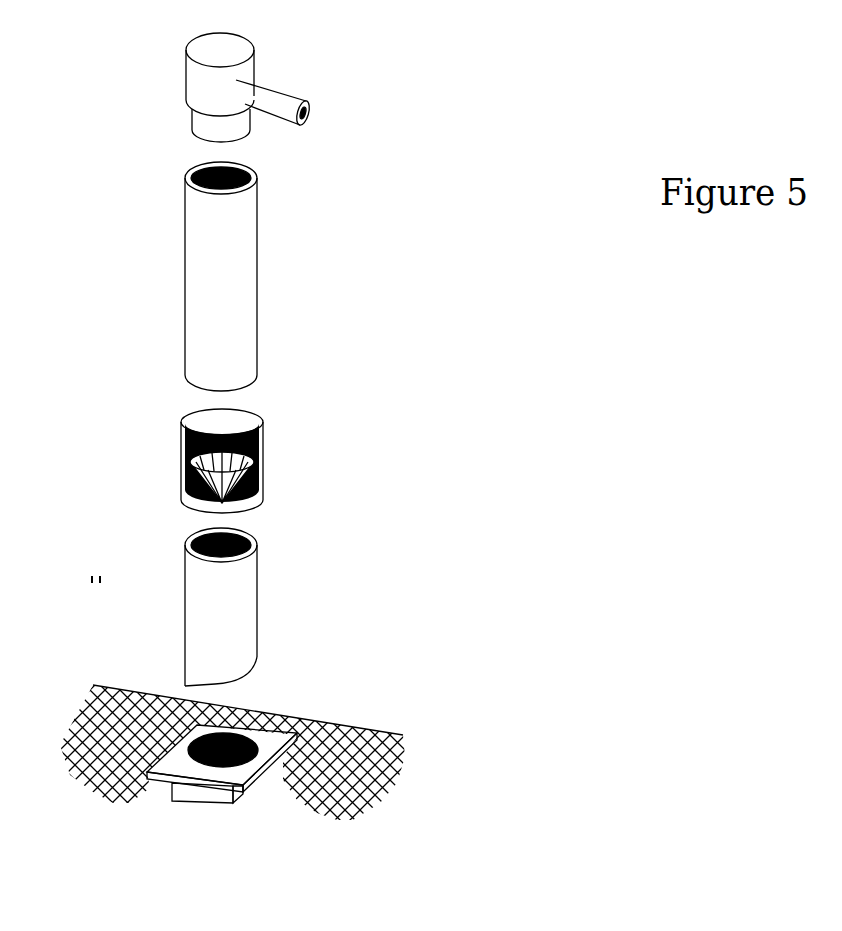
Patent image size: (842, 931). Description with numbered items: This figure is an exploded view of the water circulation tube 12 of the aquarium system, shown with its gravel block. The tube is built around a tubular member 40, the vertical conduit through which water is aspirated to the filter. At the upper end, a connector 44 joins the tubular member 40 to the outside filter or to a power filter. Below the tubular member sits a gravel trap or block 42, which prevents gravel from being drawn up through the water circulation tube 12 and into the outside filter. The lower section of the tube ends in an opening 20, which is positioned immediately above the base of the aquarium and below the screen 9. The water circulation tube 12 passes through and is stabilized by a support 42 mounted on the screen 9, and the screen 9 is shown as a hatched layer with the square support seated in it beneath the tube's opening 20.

The connector 44 is at (258, 46).
The tubular member 40 is at (256, 230).
The water circulation tube 12 is at (180, 296).
The gravel trap or block 42 is at (265, 482).
The opening 20 is at (237, 677).
The screen 9 is at (382, 727).